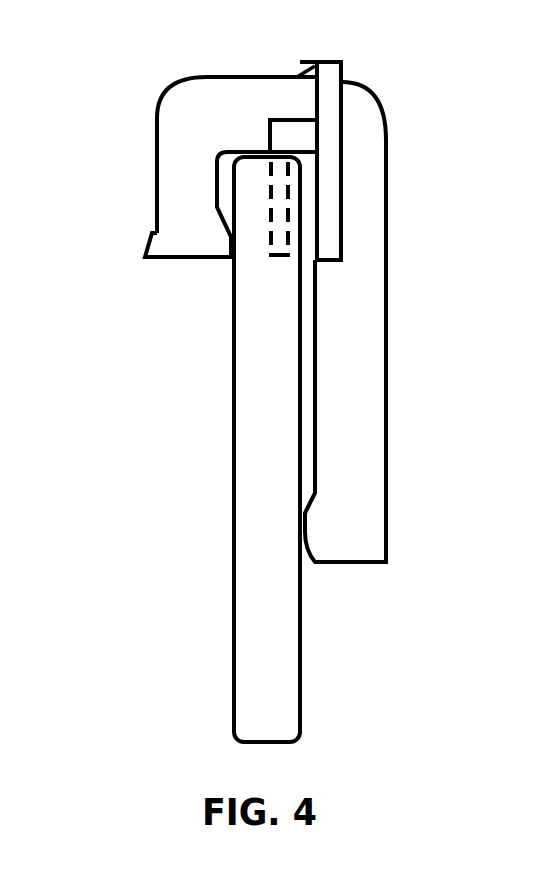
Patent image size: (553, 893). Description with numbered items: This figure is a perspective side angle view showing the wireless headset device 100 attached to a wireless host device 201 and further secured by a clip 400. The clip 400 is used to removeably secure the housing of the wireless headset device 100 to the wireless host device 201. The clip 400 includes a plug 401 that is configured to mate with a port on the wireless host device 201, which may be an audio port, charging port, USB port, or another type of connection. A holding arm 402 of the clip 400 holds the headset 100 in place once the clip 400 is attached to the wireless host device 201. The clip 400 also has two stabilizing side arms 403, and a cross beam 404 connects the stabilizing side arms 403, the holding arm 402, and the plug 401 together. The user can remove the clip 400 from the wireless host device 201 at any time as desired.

The wireless headset device 100 is at (419, 403).
The wireless host device 201 is at (252, 449).
The clip 400 is at (360, 71).
The plug 401 is at (279, 203).
The holding arm 402 is at (300, 62).
The stabilizing side arms 403 is at (328, 225).
The cross beam 404 is at (287, 138).